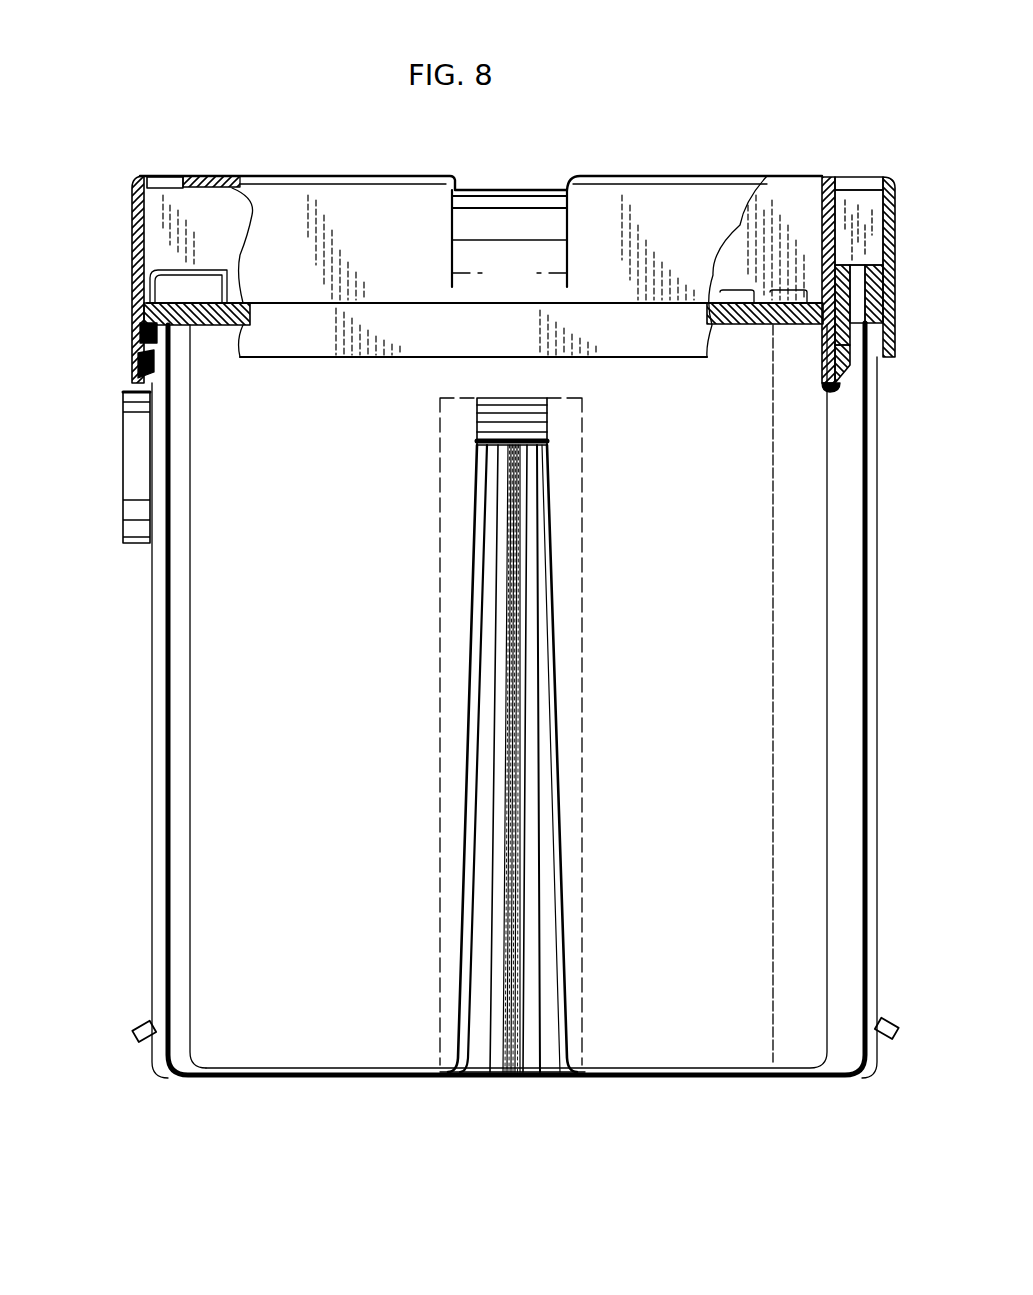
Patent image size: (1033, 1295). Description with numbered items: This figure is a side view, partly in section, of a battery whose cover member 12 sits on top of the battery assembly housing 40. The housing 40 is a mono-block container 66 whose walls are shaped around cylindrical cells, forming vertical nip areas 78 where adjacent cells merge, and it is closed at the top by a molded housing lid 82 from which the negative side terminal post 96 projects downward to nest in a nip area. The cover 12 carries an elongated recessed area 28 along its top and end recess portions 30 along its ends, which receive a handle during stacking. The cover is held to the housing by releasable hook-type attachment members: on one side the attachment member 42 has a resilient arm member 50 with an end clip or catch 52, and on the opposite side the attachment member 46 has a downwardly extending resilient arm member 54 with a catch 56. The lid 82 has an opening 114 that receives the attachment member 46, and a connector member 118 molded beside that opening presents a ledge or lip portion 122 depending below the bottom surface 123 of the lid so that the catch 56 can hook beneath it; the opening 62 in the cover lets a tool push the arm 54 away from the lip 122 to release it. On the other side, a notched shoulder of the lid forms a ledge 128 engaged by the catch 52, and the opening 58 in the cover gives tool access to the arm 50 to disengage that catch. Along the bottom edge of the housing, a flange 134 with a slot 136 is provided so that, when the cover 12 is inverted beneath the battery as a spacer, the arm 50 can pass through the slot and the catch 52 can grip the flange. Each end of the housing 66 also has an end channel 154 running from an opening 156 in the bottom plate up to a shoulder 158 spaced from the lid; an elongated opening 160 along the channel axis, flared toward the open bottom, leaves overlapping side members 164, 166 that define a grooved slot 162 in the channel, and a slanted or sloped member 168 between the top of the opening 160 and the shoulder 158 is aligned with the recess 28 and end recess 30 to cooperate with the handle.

The cover member 12 is at (659, 166).
The recessed area 28 is at (516, 182).
The end recess portion 30 is at (498, 232).
The battery assembly housing 40 is at (878, 638).
The attachment member 42 is at (124, 276).
The attachment member 46 is at (838, 222).
The resilient arm member 50 is at (133, 233).
The end clip or catch 52 is at (135, 368).
The resilient arm member 54 is at (859, 227).
The end clip or catch 56 is at (832, 372).
The opening 58 is at (160, 180).
The opening 62 is at (843, 185).
The mono-block container 66 is at (268, 658).
The nip area 78 is at (512, 890).
The housing lid 82 is at (219, 337).
The negative side terminal post 96 is at (135, 545).
The opening 114 is at (815, 325).
The connector member 118 is at (887, 265).
The ledge or lip portion 122 is at (855, 350).
The bottom surface 123 is at (743, 327).
The ledge 128 is at (186, 335).
The flange 134 is at (141, 1025).
The slot 136 is at (892, 1012).
The end channel 154 is at (580, 616).
The opening 156 is at (478, 1075).
The shoulder 158 is at (490, 448).
The elongated opening 160 is at (542, 470).
The grooved slot 162 is at (563, 720).
The side member 164 is at (460, 585).
The side member 166 is at (570, 773).
The slanted or sloped member 168 is at (512, 425).